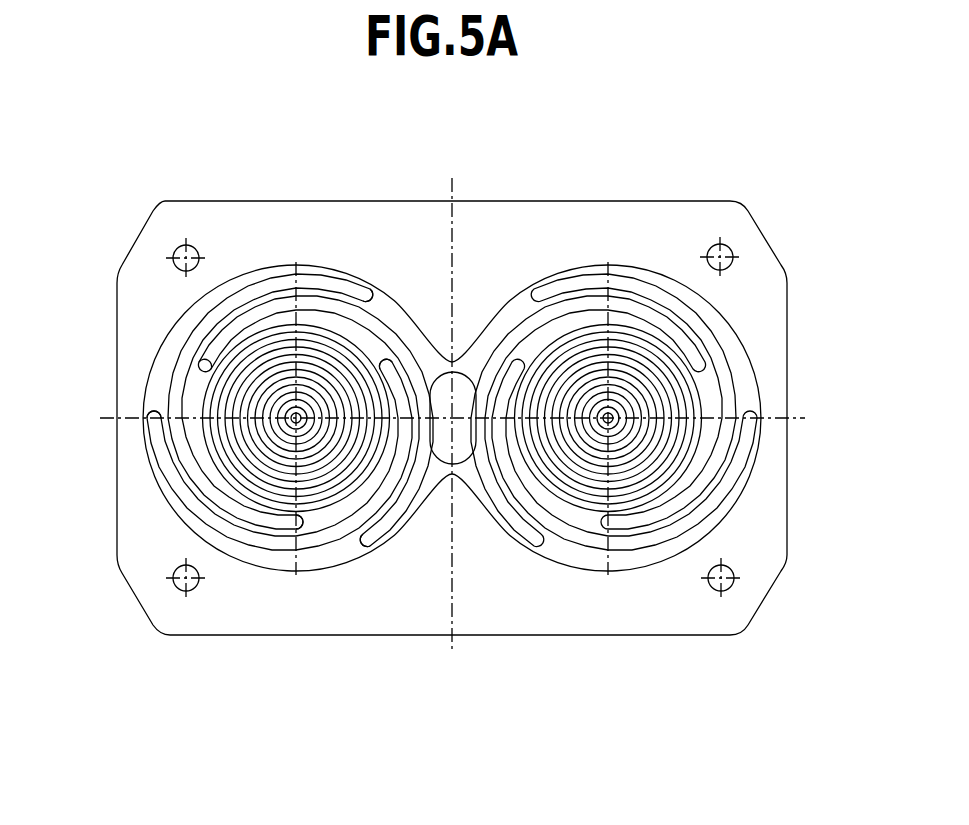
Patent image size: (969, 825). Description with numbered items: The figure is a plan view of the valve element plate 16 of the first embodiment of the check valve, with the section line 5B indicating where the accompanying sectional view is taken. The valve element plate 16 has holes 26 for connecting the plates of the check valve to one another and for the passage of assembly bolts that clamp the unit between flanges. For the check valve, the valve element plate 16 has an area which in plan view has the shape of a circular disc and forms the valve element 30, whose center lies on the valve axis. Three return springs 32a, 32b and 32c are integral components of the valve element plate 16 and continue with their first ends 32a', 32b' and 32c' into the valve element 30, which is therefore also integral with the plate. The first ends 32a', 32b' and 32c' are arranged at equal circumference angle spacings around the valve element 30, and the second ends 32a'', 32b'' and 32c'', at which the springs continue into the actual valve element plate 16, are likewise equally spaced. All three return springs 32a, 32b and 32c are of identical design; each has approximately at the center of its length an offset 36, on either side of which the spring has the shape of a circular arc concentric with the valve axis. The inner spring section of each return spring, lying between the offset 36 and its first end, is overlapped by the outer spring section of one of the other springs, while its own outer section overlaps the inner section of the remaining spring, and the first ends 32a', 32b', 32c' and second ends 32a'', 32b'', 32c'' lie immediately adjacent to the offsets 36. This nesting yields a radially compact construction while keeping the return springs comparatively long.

The valve element plate 16 is at (572, 212).
The holes 26 is at (736, 590).
The valve element 30 is at (268, 310).
The return spring 32a is at (452, 530).
The first end of return spring 32a' is at (428, 249).
The second end of return spring 32a'' is at (104, 339).
The return spring 32b is at (451, 338).
The first end of return spring 32b' is at (215, 250).
The second end of return spring 32b'' is at (392, 617).
The return spring 32c is at (437, 329).
The first end of return spring 32c' is at (290, 608).
The second end of return spring 32c'' is at (344, 216).
The offset 36 is at (373, 340).
The section line 5B is at (77, 340).